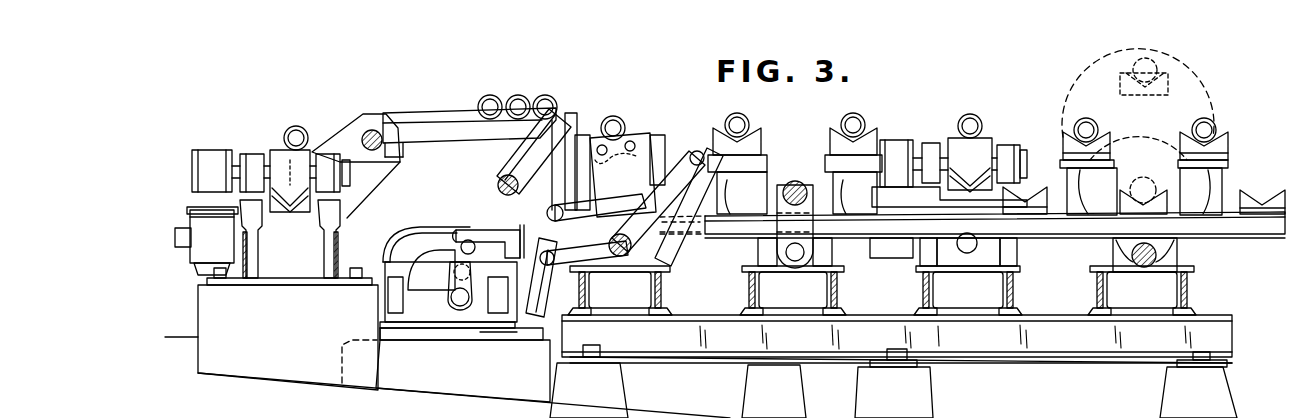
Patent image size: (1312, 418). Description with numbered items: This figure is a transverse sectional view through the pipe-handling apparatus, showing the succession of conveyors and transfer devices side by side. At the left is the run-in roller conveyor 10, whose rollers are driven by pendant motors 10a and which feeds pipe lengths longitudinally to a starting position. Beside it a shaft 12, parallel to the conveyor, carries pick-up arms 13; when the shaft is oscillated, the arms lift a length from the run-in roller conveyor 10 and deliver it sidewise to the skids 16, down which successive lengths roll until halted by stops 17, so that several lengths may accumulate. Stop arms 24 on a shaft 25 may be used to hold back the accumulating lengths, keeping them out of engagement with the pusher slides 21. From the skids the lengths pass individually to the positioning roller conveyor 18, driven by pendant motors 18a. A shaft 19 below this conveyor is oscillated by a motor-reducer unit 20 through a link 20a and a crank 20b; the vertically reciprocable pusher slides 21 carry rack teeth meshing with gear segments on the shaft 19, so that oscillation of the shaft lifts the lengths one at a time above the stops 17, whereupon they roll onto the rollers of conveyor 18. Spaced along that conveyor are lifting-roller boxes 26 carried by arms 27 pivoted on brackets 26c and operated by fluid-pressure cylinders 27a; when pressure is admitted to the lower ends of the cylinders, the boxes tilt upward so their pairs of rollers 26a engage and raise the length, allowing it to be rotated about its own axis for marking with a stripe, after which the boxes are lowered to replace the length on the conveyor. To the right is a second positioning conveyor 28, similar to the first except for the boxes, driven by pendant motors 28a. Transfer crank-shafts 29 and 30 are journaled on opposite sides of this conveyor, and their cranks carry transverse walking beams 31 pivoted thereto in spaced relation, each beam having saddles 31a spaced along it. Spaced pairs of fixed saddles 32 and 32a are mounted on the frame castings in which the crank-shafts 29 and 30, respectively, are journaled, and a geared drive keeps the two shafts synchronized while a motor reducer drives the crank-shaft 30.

The run-in roller conveyor 10 is at (282, 148).
The pendant motor 10a is at (200, 245).
The shaft 12 is at (382, 151).
The pick-up arm 13 is at (335, 140).
The skid 16 is at (426, 113).
The stop 17 is at (571, 113).
The positioning roller conveyor 18 is at (641, 125).
The pendant motor 18a is at (665, 258).
The shaft 19 is at (620, 290).
The motor-reducer unit 20 is at (403, 238).
The link 20a is at (455, 287).
The crank 20b is at (518, 228).
The pusher slide 21 is at (530, 95).
The stop arm 24 is at (516, 160).
The shaft 25 is at (498, 188).
The lifting-roller box 26 is at (634, 197).
The roller 26a is at (609, 117).
The bracket 26c is at (650, 262).
The arm 27 is at (684, 140).
The fluid-pressure cylinder 27a is at (533, 296).
The second positioning conveyor 28 is at (984, 146).
The pendant motor 28a is at (906, 260).
The transfer crank-shaft 29 is at (795, 176).
The transfer crank-shaft 30 is at (1142, 270).
The walking beam 31 is at (1061, 230).
The saddle 31a is at (1027, 194).
The fixed saddle 32 is at (754, 137).
The fixed saddle 32a is at (1107, 134).